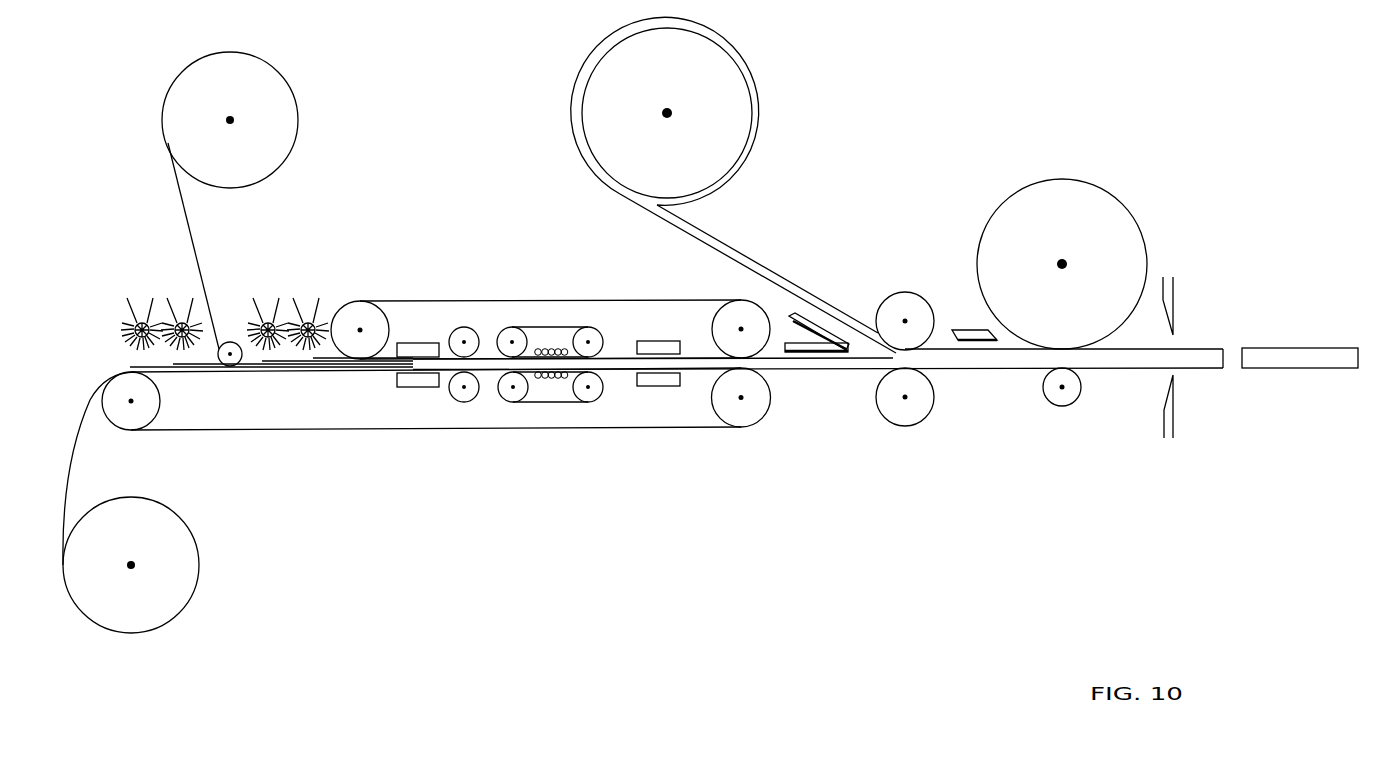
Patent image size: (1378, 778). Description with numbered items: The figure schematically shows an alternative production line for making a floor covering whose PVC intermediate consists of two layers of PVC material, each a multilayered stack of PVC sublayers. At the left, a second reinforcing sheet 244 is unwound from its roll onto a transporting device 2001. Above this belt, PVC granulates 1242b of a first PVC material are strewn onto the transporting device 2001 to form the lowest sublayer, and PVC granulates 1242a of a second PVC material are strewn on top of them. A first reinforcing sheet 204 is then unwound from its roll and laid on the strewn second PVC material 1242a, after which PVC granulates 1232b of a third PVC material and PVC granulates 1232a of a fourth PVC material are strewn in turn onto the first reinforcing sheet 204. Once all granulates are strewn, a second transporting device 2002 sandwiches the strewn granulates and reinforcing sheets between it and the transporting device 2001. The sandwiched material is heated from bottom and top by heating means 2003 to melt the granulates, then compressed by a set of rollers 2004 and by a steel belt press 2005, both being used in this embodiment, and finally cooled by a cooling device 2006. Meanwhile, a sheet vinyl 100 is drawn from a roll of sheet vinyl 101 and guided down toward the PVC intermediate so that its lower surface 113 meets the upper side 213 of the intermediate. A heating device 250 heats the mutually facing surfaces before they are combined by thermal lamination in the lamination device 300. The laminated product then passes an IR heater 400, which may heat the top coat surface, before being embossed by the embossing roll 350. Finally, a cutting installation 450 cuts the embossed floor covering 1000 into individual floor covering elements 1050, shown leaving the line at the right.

The first reinforcing sheet 204 is at (241, 82).
The roll of sheet vinyl 101 is at (681, 72).
The sheet vinyl 100 is at (702, 231).
The lower surface of the sheet vinyl 113 is at (637, 218).
The PVC granulates of a second PVC material 1242a is at (182, 286).
The PVC granulates of a first PVC material 1242b is at (142, 286).
The PVC granulates of a fourth PVC material 1232a is at (308, 286).
The PVC granulates of a third PVC material 1232b is at (268, 286).
The transporting device 2001 is at (192, 430).
The second transporting device 2002 is at (415, 301).
The heating means 2003 is at (418, 347).
The set of rollers 2004 is at (464, 342).
The steel belt press 2005 is at (550, 327).
The cooling device 2006 is at (658, 341).
The heating device 250 is at (795, 317).
The upper side of the extruded PVC intermediate 213 is at (862, 340).
The lamination device 300 is at (905, 312).
The IR heater 400 is at (972, 335).
The embossing roll 350 is at (1081, 222).
The cutting installation 450 is at (1173, 288).
The laminated web 1000 is at (1127, 362).
The cut sheet 1050 is at (1328, 360).
The second reinforcing sheet 244 is at (147, 534).